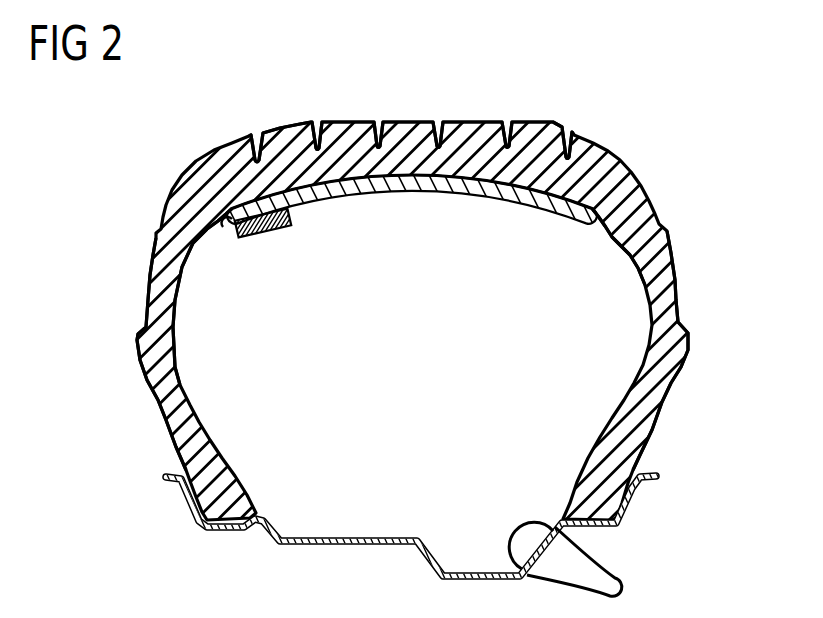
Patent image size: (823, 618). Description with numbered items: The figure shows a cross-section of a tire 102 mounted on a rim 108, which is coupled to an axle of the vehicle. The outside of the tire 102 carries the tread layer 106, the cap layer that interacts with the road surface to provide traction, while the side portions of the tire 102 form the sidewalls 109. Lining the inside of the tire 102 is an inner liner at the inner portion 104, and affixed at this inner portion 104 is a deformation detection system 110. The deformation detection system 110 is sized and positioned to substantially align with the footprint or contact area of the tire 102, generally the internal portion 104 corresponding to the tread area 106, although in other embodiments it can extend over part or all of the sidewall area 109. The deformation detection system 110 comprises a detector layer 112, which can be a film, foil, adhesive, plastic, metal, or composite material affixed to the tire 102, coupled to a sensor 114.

The tire 102 is at (610, 158).
The inner portion of tire 104 is at (600, 222).
The tread layer 106 is at (270, 97).
The rim 108 is at (636, 505).
The sidewalls 109 is at (112, 268).
The deformation detection system 110 is at (432, 223).
The detector layer 112 is at (383, 186).
The sensor 114 is at (268, 230).